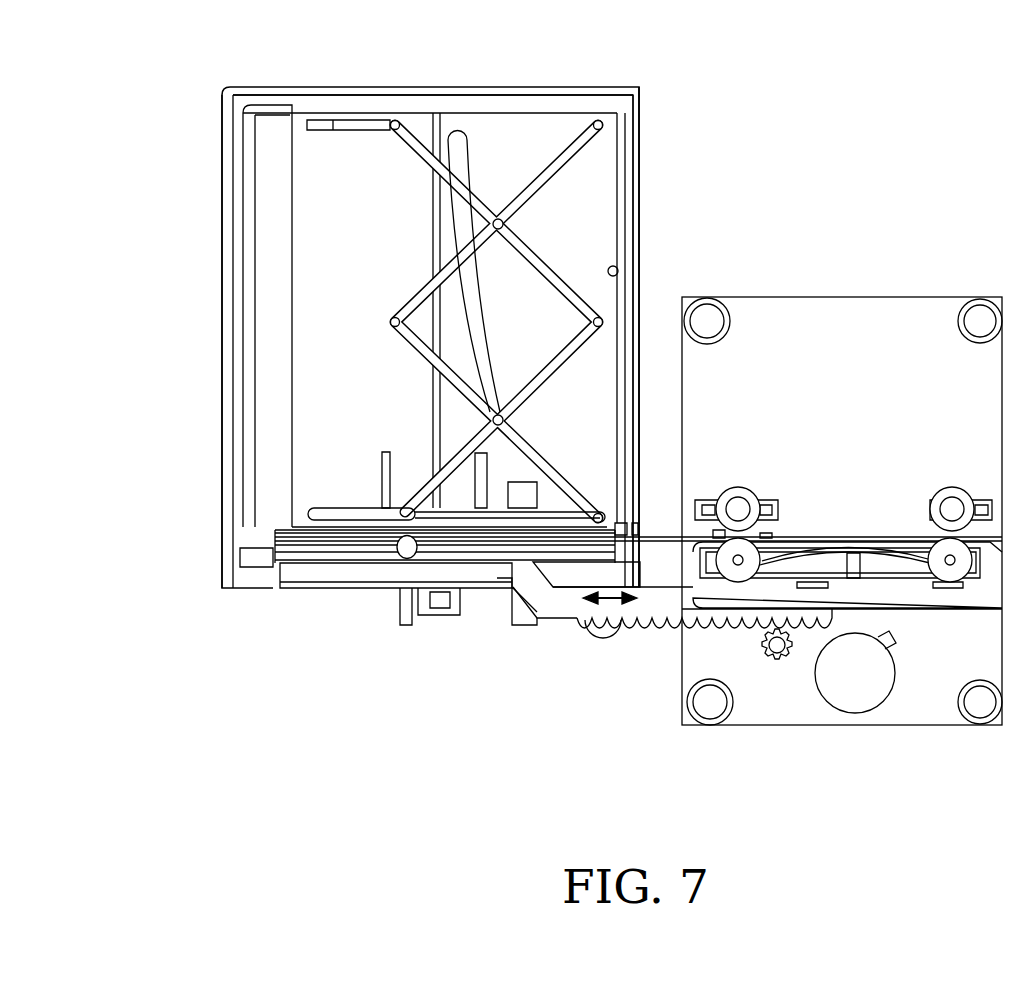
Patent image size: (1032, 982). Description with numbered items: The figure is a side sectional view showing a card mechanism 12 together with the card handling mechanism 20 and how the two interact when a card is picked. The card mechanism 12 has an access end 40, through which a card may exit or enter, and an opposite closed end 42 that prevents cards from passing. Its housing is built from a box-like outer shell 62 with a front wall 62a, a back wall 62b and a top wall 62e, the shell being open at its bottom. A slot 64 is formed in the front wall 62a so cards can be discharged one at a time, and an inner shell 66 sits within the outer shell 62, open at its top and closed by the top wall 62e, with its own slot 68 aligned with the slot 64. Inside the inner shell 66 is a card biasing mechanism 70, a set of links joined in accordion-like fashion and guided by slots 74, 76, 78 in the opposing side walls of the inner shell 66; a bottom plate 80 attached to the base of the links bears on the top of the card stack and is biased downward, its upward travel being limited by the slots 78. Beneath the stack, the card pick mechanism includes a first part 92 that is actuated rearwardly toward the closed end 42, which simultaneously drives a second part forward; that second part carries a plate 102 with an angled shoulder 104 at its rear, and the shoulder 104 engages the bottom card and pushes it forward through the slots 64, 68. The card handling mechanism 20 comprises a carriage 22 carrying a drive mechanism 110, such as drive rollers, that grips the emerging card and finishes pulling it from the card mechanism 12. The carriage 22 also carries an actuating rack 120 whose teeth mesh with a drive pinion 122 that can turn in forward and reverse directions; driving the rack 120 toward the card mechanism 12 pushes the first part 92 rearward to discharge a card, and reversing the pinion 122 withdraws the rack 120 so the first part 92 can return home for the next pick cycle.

The card mechanism 12 is at (280, 635).
The card handling mechanism 20 is at (842, 534).
The carriage 22 is at (795, 318).
The access end 40 is at (640, 127).
The closed end 42 is at (228, 325).
The outer shell 62 is at (276, 80).
The front wall 62a is at (633, 163).
The back wall 62b is at (226, 402).
The top wall 62e is at (328, 87).
The slot 64 is at (638, 530).
The inner shell 66 is at (436, 104).
The slot 68 is at (618, 552).
The card biasing mechanism 70 is at (526, 176).
The slot 74 is at (462, 150).
The slot 76 is at (345, 130).
The slot 78 is at (478, 466).
The bottom plate 80 is at (342, 508).
The first part 92 is at (352, 575).
The plate 102 is at (520, 575).
The angled shoulder 104 is at (410, 565).
The drive mechanism 110 is at (745, 488).
The actuating rack 120 is at (652, 600).
The drive pinion 122 is at (771, 664).